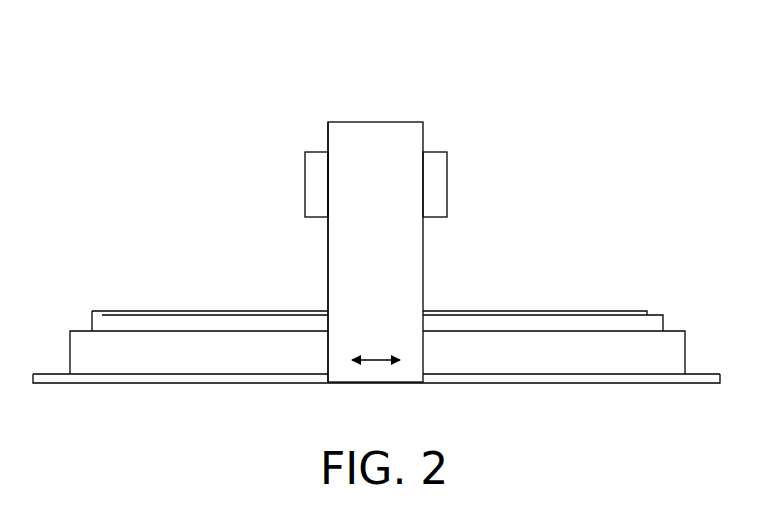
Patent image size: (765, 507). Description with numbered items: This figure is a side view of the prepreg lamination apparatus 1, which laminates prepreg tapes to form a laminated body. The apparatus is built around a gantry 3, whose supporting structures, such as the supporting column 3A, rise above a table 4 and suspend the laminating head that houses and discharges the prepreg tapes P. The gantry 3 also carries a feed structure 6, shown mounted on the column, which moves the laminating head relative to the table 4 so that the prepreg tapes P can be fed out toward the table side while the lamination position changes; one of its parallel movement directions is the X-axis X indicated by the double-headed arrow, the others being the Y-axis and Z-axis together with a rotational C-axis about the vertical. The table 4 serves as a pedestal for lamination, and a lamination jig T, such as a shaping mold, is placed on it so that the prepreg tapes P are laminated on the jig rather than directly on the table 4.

The prepreg lamination apparatus 1 is at (347, 104).
The gantry 3 is at (323, 137).
The supporting column 3A is at (327, 252).
The feed structure 6 is at (448, 187).
The table 4 is at (672, 331).
The lamination jig T is at (652, 313).
The prepreg tape P is at (528, 310).
The X-axis X is at (378, 357).